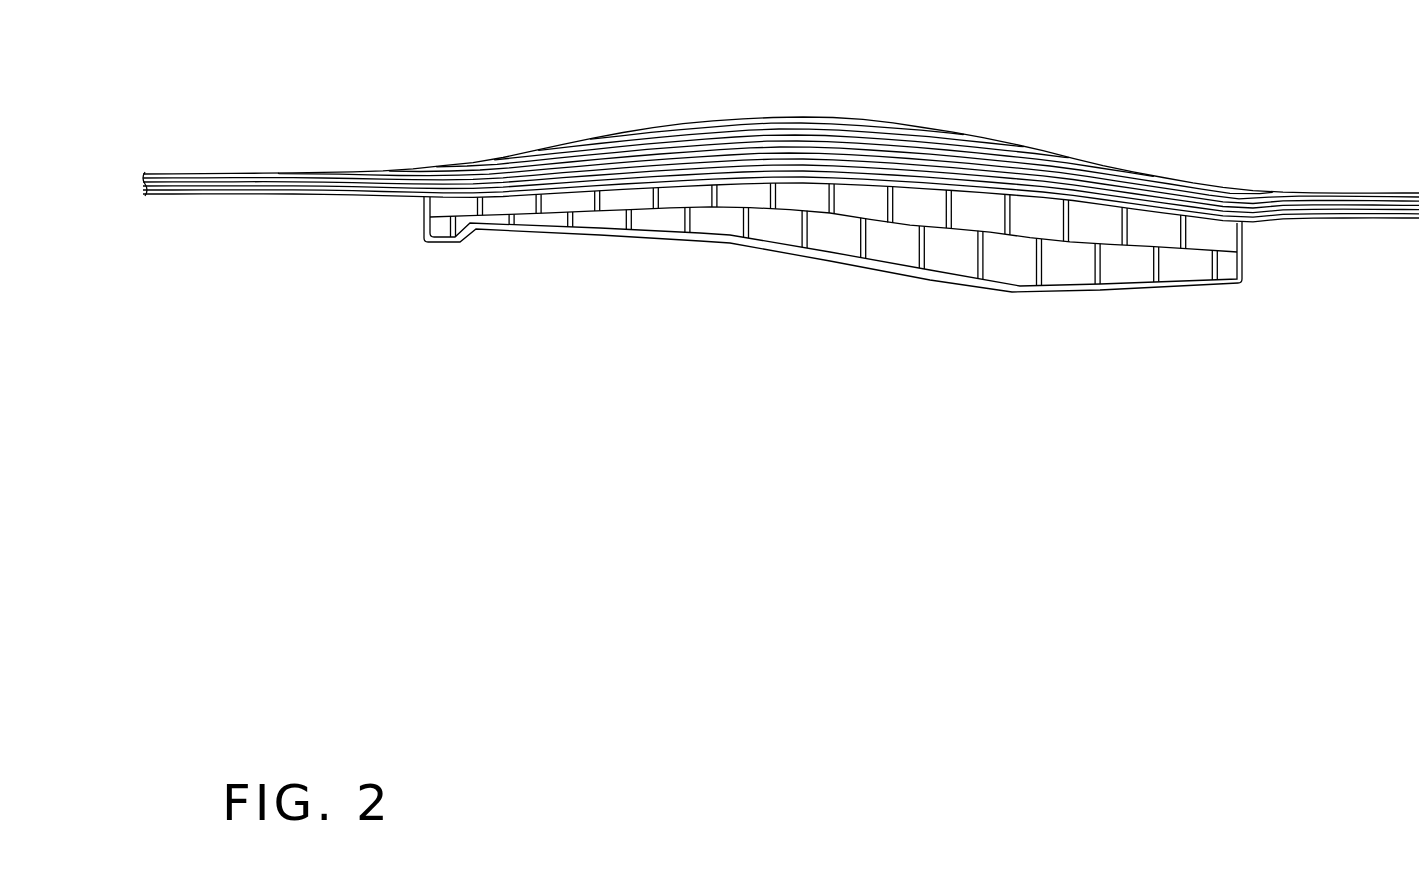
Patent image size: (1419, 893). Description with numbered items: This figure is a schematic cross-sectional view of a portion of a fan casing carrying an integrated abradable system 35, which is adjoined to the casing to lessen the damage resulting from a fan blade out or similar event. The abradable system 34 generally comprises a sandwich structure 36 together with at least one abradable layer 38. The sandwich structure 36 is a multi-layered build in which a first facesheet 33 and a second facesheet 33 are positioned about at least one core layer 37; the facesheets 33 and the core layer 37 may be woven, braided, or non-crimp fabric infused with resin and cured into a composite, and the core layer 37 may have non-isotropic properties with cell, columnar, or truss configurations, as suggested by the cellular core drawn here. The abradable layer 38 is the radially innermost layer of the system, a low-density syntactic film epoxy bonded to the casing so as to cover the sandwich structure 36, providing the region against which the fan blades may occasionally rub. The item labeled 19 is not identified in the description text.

The laminated skin 19 is at (273, 195).
The facesheet 33 is at (958, 186).
The abradable system 34 is at (1250, 223).
The integrated abradable system 35 is at (1152, 88).
The sandwich structure 36 is at (1250, 223).
The core layer 37 is at (443, 207).
The abradable layer 38 is at (862, 268).